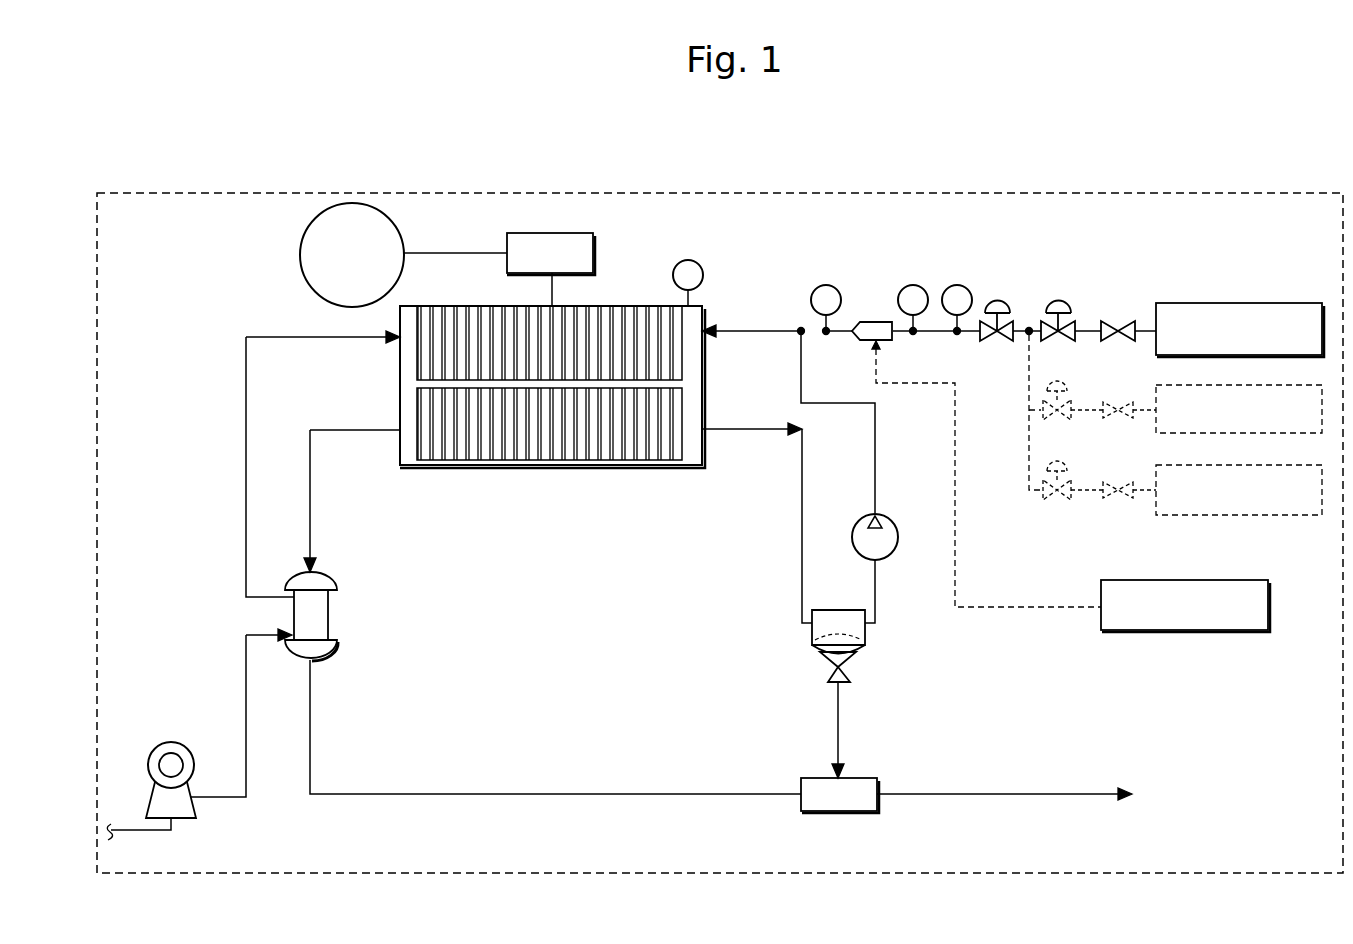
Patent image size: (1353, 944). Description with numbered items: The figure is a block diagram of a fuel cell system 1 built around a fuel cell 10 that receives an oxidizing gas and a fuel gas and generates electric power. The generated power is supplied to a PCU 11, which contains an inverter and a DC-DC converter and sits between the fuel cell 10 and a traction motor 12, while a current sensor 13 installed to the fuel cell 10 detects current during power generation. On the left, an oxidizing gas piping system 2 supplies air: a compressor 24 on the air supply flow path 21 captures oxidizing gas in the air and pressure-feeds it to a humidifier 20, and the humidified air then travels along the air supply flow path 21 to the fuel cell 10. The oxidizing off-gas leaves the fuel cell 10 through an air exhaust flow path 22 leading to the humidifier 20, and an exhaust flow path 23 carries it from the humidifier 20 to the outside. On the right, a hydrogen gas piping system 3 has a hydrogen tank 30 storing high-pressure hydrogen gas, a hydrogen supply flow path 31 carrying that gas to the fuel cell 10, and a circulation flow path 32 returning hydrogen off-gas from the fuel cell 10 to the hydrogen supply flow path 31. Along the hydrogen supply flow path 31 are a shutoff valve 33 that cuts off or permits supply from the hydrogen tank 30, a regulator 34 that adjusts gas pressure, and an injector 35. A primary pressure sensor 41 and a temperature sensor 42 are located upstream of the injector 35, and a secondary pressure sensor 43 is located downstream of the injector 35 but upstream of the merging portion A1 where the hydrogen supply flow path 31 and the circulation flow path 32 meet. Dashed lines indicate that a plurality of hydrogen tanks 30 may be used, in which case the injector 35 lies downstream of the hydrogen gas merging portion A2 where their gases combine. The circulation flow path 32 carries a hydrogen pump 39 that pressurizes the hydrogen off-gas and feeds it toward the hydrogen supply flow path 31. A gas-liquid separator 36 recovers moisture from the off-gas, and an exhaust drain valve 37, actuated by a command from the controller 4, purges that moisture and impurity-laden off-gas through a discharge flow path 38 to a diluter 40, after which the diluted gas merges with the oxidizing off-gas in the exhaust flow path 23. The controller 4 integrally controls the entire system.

The fuel cell system 1 is at (540, 192).
The oxidizing gas piping system 2 is at (356, 568).
The hydrogen gas piping system 3 is at (782, 610).
The controller 4 is at (1180, 580).
The fuel cell 10 is at (650, 467).
The PCU (Power Control Unit) 11 is at (595, 260).
The traction motor 12 is at (302, 262).
The current sensor 13 is at (694, 258).
The humidifier 20 is at (330, 624).
The air supply flow path 21 is at (246, 545).
The air exhaust flow path 22 is at (310, 528).
The exhaust flow path 23 is at (740, 794).
The compressor 24 is at (180, 745).
The hydrogen tank 30 is at (1270, 303).
The hydrogen supply flow path 31 is at (752, 331).
The circulation flow path 32 is at (802, 576).
The shutoff valve 33 is at (1112, 328).
The regulator 34 is at (997, 300).
The injector 35 is at (870, 322).
The gas-liquid separator 36 is at (824, 610).
The exhaust drain valve 37 is at (830, 672).
The discharge flow path 38 is at (838, 736).
The hydrogen pump 39 is at (895, 520).
The diluter 40 is at (880, 784).
The primary pressure sensor 41 is at (915, 285).
The temperature sensor 42 is at (958, 285).
The secondary pressure sensor 43 is at (826, 285).
The merging portion A1 is at (801, 336).
The hydrogen gas merging portion A2 is at (1028, 335).